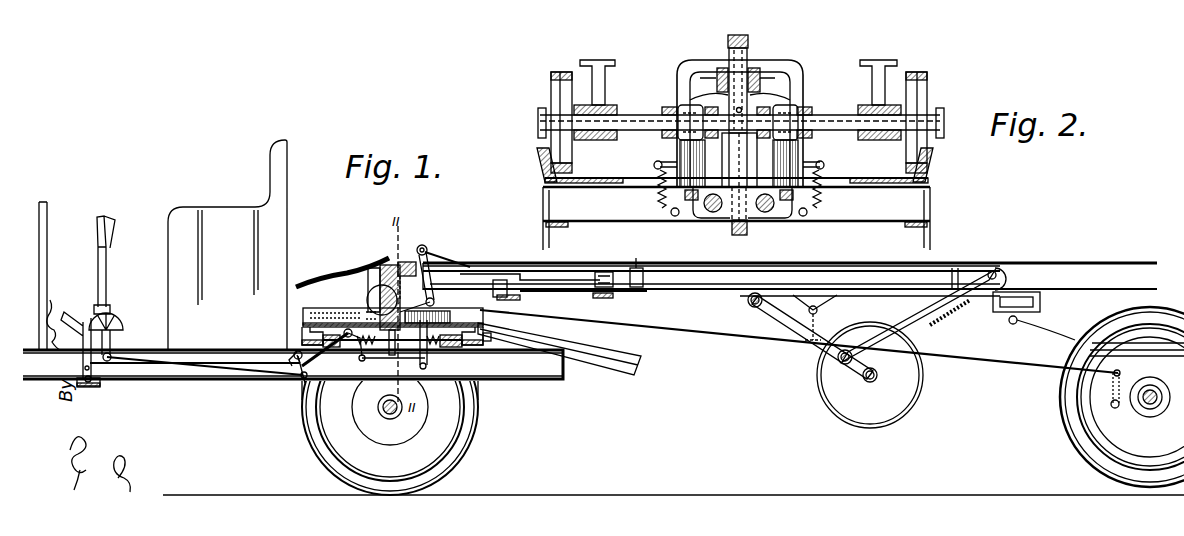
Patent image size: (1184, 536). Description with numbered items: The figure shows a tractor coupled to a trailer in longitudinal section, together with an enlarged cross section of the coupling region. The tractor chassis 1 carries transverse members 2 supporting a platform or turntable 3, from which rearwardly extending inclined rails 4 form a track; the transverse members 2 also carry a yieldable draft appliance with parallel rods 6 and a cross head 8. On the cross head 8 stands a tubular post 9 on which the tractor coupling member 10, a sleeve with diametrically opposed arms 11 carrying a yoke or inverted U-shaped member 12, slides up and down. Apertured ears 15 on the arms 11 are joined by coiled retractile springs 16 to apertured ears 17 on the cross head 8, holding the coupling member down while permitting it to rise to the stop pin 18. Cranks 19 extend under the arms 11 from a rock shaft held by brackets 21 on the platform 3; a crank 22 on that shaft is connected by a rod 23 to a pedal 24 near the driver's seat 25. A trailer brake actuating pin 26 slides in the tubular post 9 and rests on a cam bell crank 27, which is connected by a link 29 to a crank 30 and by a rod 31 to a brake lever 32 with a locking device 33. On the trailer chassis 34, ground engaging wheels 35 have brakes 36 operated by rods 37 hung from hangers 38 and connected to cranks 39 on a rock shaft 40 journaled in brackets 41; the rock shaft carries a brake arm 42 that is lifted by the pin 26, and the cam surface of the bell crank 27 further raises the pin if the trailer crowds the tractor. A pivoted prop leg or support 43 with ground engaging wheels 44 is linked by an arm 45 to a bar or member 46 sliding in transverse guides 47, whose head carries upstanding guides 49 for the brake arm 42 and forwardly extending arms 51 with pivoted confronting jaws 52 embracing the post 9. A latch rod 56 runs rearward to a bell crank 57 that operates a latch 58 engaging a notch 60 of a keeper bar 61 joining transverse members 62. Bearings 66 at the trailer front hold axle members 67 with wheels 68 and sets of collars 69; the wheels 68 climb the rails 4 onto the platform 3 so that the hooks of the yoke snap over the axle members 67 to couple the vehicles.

In FIG. 1, the tractor chassis 1 is at (540, 264).
In FIG. 2, the tractor chassis 1 is at (931, 228).
In FIG. 1, the transverse members 2 is at (302, 336).
In FIG. 1, the platform or turntable 3 is at (318, 310).
In FIG. 2, the platform or turntable 3 is at (612, 177).
In FIG. 1, the inclined rails 4 is at (612, 370).
In FIG. 1, the parallel rods 6 is at (482, 339).
In FIG. 2, the parallel rods 6 is at (713, 213).
In FIG. 1, the cross head 8 is at (341, 362).
In FIG. 2, the cross head 8 is at (735, 232).
In FIG. 1, the tubular post 9 is at (360, 308).
In FIG. 2, the tubular post 9 is at (780, 75).
In FIG. 1, the tractor coupling member 10 is at (345, 318).
In FIG. 2, the tractor coupling member 10 is at (798, 150).
In FIG. 2, the arms 11 is at (664, 196).
In FIG. 1, the yoke or inverted U-shaped member 12 is at (380, 268).
In FIG. 2, the yoke or inverted U-shaped member 12 is at (690, 64).
In FIG. 2, the apertured ears 15 is at (655, 163).
In FIG. 2, the coiled retractile springs 16 is at (671, 215).
In FIG. 2, the apertured ears 17 is at (700, 216).
In FIG. 2, the stop pin 18 is at (730, 110).
In FIG. 2, the cranks 19 is at (690, 201).
In FIG. 1, the brackets 21 is at (440, 330).
In FIG. 1, the crank 22 is at (429, 357).
In FIG. 1, the rod 23 is at (152, 366).
In FIG. 1, the pedal 24 is at (73, 343).
In FIG. 1, the driver's seat 25 is at (163, 245).
In FIG. 1, the trailer brake actuating pin 26 is at (386, 263).
In FIG. 2, the trailer brake actuating pin 26 is at (740, 236).
In FIG. 1, the cam bell crank 27 is at (727, 263).
In FIG. 1, the link 29 is at (301, 380).
In FIG. 1, the crank 30 is at (294, 362).
In FIG. 1, the rod 31 is at (212, 370).
In FIG. 1, the brake lever 32 is at (97, 273).
In FIG. 1, the locking device 33 is at (112, 316).
In FIG. 1, the trailer chassis 34 is at (1093, 262).
In FIG. 2, the trailer chassis 34 is at (598, 59).
In FIG. 1, the ground engaging wheels 35 is at (1063, 427).
In FIG. 1, the brakes 36 is at (1125, 414).
In FIG. 1, the rods 37 is at (718, 334).
In FIG. 1, the hangers 38 is at (818, 312).
In FIG. 1, the cranks 39 is at (446, 262).
In FIG. 1, the rock shaft 40 is at (422, 245).
In FIG. 1, the brackets 41 is at (431, 256).
In FIG. 1, the brake arm 42 is at (330, 282).
In FIG. 2, the brake arm 42 is at (740, 35).
In FIG. 1, the pivoted prop leg or support 43 is at (788, 320).
In FIG. 1, the ground engaging wheels 44 is at (912, 408).
In FIG. 1, the arm 45 is at (924, 318).
In FIG. 1, the bar or member 46 is at (896, 276).
In FIG. 1, the transverse guides or members 47 is at (470, 264).
In FIG. 1, the upstanding guides 49 is at (405, 262).
In FIG. 2, the forwardly extending arms 51 is at (720, 68).
In FIG. 1, the pivoted confronting jaws 52 is at (367, 297).
In FIG. 2, the pivoted confronting jaws 52 is at (716, 79).
In FIG. 1, the latch rod 56 is at (507, 272).
In FIG. 1, the bell crank 57 is at (641, 287).
In FIG. 1, the latch 58 is at (612, 290).
In FIG. 1, the notch 60 is at (506, 297).
In FIG. 1, the keeper bar 61 is at (560, 293).
In FIG. 1, the transverse members 62 is at (497, 298).
In FIG. 2, the bearings 66 is at (598, 141).
In FIG. 2, the axle members 67 is at (640, 116).
In FIG. 2, the wheels 68 is at (560, 72).
In FIG. 2, the sets of collars 69 is at (790, 105).